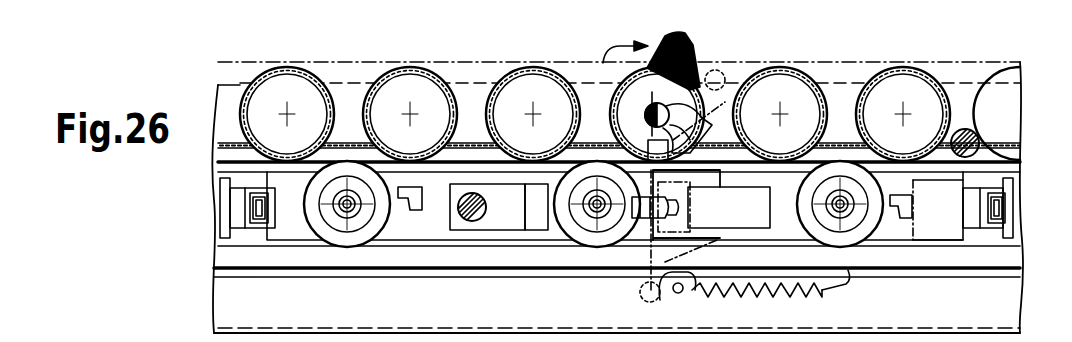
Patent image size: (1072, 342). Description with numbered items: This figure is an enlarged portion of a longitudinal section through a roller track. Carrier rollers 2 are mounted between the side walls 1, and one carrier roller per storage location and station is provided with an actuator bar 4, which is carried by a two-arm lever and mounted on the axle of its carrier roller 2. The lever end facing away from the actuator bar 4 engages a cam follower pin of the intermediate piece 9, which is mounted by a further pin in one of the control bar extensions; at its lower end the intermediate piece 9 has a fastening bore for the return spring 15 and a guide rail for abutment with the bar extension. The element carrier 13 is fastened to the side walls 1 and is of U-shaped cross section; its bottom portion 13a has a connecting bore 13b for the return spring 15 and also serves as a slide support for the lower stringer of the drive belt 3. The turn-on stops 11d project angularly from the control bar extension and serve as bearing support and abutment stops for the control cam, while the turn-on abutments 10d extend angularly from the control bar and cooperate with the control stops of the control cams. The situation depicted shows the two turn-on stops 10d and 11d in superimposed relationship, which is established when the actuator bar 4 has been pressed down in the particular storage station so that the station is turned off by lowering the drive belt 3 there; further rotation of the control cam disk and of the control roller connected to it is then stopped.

The side walls 1 is at (467, 95).
The carrier rollers 2 is at (563, 75).
The drive belt 3 is at (1018, 160).
The actuator bar 4 is at (697, 49).
The intermediate piece 9 is at (627, 277).
The turn-on abutments 10d is at (322, 214).
The turn-on stops 11d is at (344, 150).
The element carrier 13 is at (453, 243).
The bottom portion 13a is at (410, 270).
The connecting bore 13b is at (852, 272).
The return spring 15 is at (765, 295).